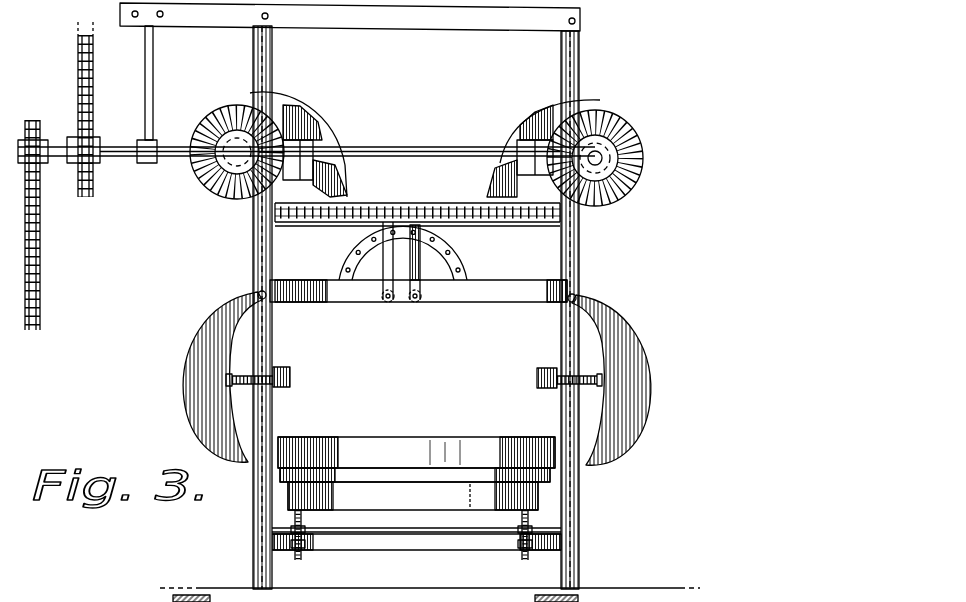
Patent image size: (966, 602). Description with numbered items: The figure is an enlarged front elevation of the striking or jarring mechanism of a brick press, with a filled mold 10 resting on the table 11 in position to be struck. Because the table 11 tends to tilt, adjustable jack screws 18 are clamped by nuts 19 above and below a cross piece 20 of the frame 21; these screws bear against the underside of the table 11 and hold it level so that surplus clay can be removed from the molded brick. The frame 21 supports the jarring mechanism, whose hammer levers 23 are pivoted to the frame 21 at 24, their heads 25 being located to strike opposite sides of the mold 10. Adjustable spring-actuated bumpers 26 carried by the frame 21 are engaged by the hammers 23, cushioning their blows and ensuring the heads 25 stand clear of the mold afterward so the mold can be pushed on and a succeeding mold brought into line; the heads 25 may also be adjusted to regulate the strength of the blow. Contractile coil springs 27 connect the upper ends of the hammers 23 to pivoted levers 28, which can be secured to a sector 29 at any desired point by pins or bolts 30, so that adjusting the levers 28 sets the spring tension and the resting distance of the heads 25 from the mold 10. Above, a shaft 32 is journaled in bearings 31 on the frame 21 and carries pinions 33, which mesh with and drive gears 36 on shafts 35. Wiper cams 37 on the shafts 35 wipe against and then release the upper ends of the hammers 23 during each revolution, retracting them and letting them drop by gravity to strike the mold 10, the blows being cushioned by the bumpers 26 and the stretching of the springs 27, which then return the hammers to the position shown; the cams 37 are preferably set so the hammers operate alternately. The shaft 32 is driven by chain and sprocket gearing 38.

The mold 10 is at (405, 446).
The table 11 is at (317, 495).
The jack screws 18 is at (518, 560).
The nuts 19 is at (306, 550).
The cross piece 20 is at (422, 543).
The frame 21 is at (268, 64).
The hammer levers 23 is at (193, 332).
The pivot 24 is at (259, 295).
The heads 25 is at (283, 437).
The spring-actuated bumpers 26 is at (291, 380).
The contractile coil springs 27 is at (457, 205).
The pivoted levers 28 is at (418, 263).
The sector 29 is at (350, 256).
The pins or bolts 30 is at (388, 233).
The bearings 31 is at (313, 141).
The shaft 32 is at (432, 144).
The pinions 33 is at (285, 130).
The shafts 35 is at (218, 185).
The gears 36 is at (222, 122).
The wiper cams 37 is at (282, 98).
The chain and sprocket gearing 38 is at (95, 107).